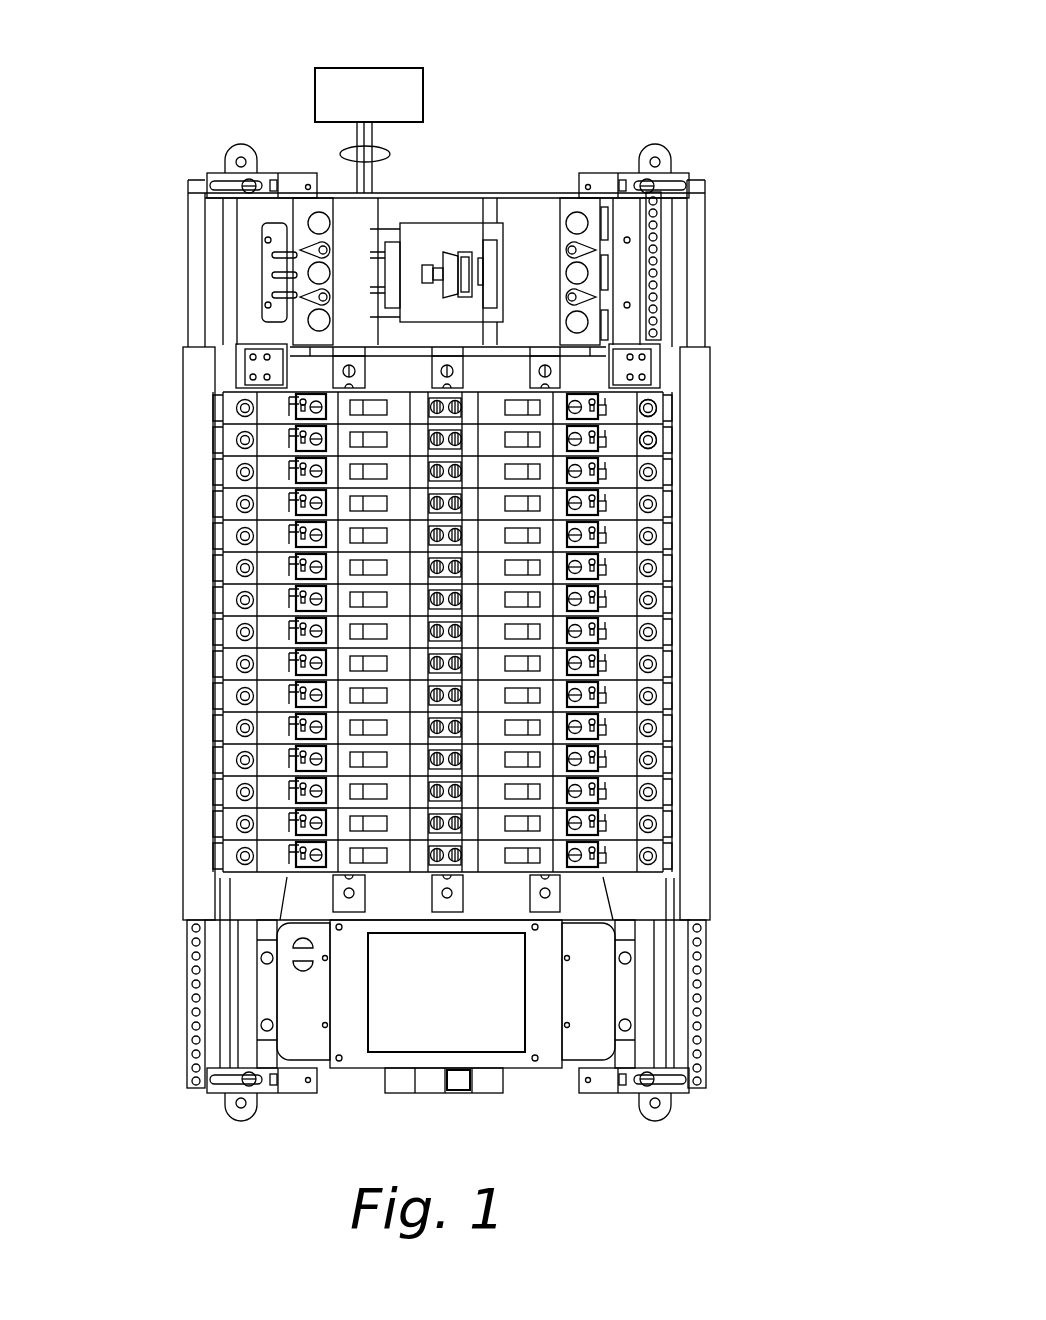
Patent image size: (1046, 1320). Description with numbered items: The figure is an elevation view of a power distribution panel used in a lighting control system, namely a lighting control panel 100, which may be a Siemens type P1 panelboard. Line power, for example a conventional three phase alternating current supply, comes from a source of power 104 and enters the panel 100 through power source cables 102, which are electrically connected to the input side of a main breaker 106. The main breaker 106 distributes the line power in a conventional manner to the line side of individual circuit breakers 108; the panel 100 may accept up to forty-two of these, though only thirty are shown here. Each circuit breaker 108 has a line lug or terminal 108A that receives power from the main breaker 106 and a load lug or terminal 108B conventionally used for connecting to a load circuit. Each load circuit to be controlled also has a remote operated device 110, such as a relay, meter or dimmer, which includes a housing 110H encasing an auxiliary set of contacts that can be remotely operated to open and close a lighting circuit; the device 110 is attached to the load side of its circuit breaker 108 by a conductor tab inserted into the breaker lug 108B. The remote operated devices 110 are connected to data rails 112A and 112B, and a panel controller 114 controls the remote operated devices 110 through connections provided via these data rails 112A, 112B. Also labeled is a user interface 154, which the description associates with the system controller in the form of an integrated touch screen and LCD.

The lighting control panel 100 is at (596, 98).
The power source cables 102 is at (390, 153).
The source of power 104 is at (423, 85).
The main breaker 106 is at (447, 237).
The individual circuit breakers 108 is at (544, 382).
The line lug or terminal 108A is at (440, 412).
The load lug or terminal 108B is at (573, 397).
The remote operated device 110 is at (625, 407).
The housing 110H is at (617, 417).
The data rail 112A is at (692, 806).
The data rail 112B is at (193, 812).
The panel controller 114 is at (515, 1058).
The user interface 154 is at (368, 1064).